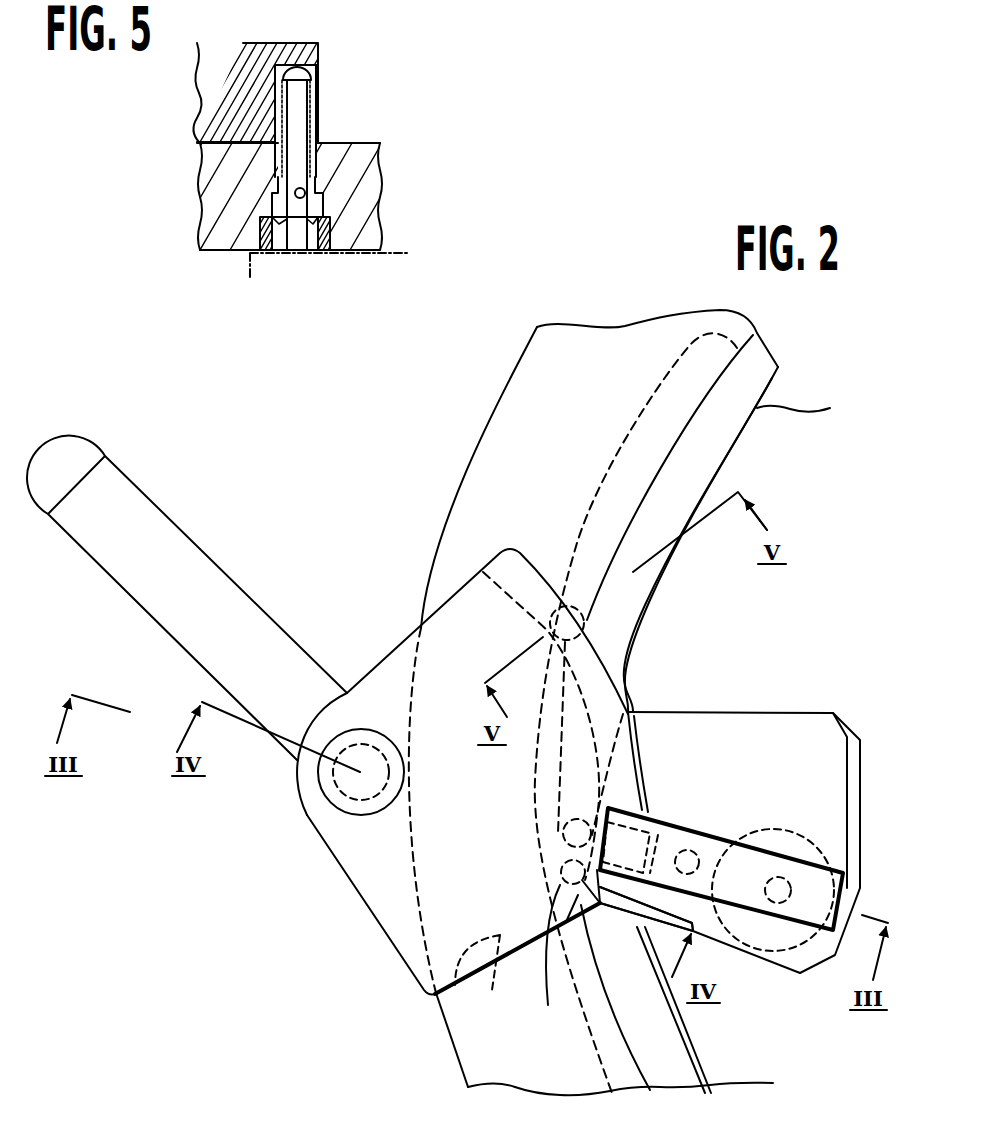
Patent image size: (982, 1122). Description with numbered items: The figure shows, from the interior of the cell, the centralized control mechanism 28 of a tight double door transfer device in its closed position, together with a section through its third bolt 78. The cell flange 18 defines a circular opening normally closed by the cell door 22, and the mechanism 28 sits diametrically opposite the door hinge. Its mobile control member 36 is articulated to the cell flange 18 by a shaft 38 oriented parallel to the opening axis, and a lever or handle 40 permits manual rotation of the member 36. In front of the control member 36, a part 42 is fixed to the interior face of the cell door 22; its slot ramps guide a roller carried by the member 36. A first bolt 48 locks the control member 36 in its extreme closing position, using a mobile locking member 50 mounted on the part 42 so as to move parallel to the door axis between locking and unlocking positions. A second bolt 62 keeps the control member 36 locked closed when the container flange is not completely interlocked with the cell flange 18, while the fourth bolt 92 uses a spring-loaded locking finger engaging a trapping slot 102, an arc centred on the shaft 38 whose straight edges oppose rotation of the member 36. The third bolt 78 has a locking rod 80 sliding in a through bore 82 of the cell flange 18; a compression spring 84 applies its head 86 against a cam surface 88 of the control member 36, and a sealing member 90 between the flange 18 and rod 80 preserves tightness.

In FIG. 2, the cell flange 18 is at (505, 402).
In FIG. 2, the cell door 22 is at (710, 627).
In FIG. 2, the centralized control mechanism 28 is at (427, 1005).
In FIG. 2, the mobile control member 36 is at (375, 893).
In FIG. 2, the shaft 38 is at (347, 788).
In FIG. 2, the lever or handle 40 is at (183, 560).
In FIG. 2, the part 42 is at (738, 720).
In FIG. 2, the first bolt 48 is at (710, 915).
In FIG. 2, the mobile locking member 50 is at (707, 847).
In FIG. 2, the second bolt 62 is at (565, 995).
In FIG. 5, the third bolt 78 is at (392, 120).
In FIG. 2, the third bolt 78 is at (580, 590).
In FIG. 5, the locking rod 80 is at (300, 115).
In FIG. 5, the through bore 82 is at (303, 195).
In FIG. 5, the compression spring 84 is at (318, 142).
In FIG. 5, the head 86 is at (316, 97).
In FIG. 5, the cam surface 88 is at (317, 70).
In FIG. 5, the sealing member 90 is at (256, 226).
In FIG. 2, the fourth bolt 92 is at (565, 834).
In FIG. 2, the trapping slot 102 is at (492, 981).